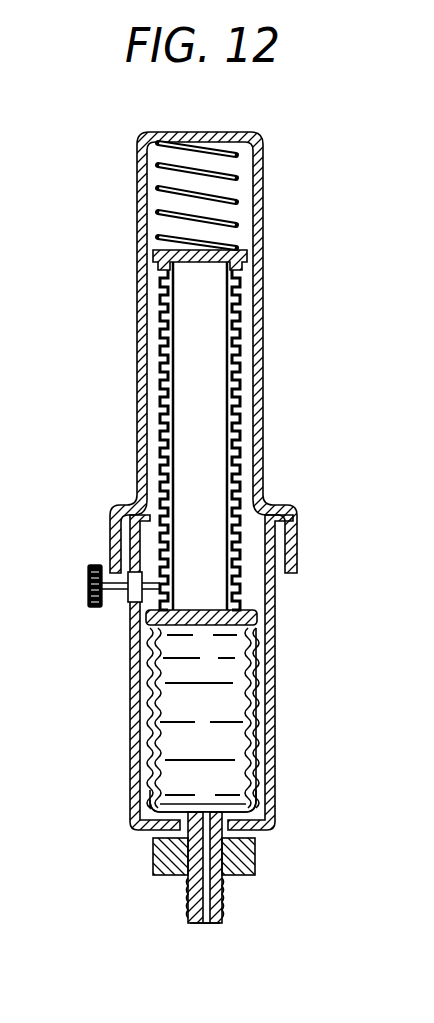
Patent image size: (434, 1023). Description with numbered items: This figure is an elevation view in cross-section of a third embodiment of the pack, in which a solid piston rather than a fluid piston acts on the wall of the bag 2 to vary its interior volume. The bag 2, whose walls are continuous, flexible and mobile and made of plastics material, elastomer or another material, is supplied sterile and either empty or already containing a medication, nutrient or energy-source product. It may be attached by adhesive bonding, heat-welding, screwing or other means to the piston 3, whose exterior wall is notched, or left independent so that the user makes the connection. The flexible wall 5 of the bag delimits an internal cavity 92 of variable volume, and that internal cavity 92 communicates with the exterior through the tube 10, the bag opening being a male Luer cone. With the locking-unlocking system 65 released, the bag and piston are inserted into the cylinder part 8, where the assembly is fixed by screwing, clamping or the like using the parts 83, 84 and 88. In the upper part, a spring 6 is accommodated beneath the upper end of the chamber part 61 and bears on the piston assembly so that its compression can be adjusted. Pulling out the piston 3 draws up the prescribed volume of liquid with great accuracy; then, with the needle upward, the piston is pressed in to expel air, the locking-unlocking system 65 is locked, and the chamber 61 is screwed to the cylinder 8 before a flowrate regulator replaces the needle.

The bag 2 is at (258, 731).
The piston 3 is at (240, 337).
The wall 5 is at (258, 786).
The spring 6 is at (243, 223).
The cylinder 8 is at (277, 640).
The tube 10 is at (203, 930).
The chamber 61 is at (263, 285).
The locking-unlocking system 65 is at (88, 577).
The fixing part 83 is at (227, 873).
The fixing part 84 is at (190, 900).
The fixing part 88 is at (253, 855).
The internal cavity 92 is at (178, 770).